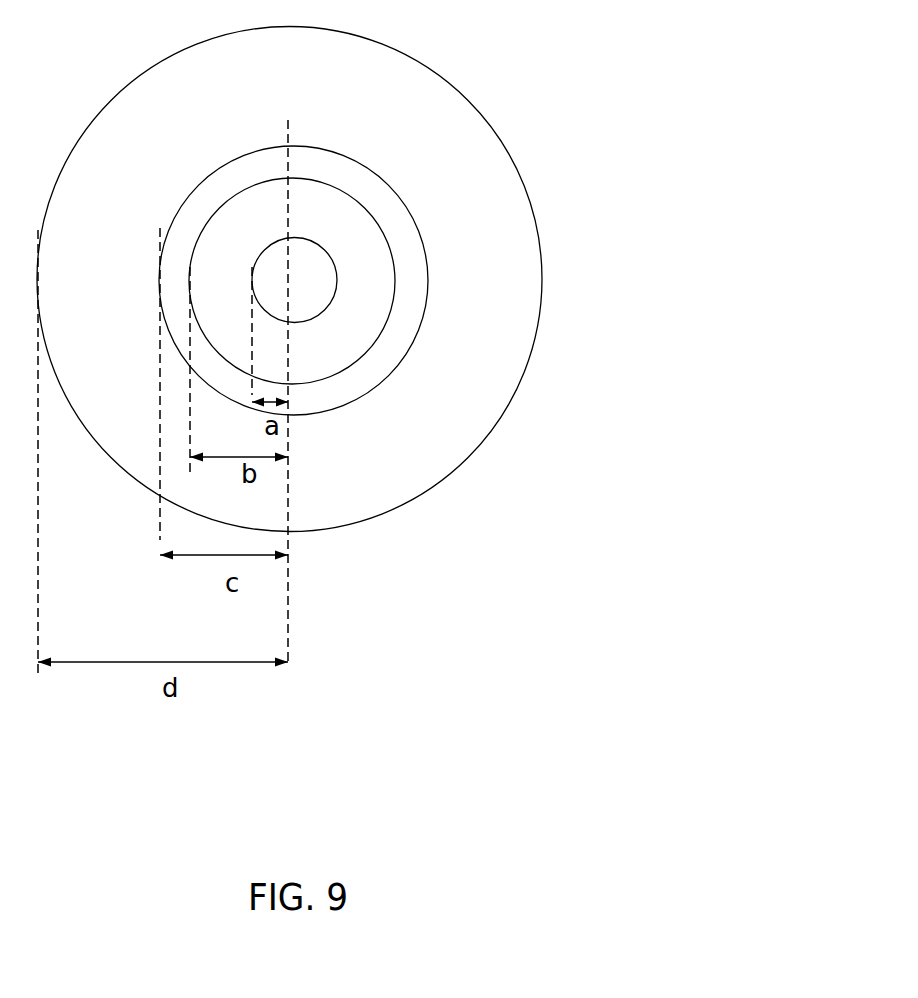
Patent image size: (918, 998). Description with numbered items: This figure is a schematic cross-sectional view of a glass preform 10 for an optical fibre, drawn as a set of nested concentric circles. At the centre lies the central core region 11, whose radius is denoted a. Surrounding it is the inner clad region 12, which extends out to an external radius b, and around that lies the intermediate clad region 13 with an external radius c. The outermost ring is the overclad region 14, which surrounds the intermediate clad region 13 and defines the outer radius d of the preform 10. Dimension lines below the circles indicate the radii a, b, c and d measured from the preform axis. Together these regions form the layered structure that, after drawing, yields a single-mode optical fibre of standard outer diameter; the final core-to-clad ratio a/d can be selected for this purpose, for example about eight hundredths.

The glass preform 10 is at (645, 403).
The central core region 11 is at (315, 288).
The inner clad region 12 is at (350, 322).
The intermediate clad region 13 is at (410, 298).
The overclad region 14 is at (457, 180).